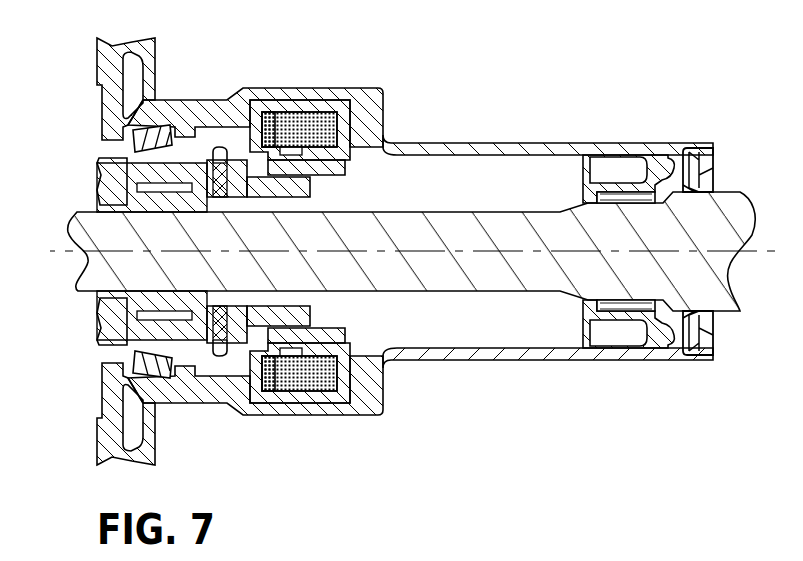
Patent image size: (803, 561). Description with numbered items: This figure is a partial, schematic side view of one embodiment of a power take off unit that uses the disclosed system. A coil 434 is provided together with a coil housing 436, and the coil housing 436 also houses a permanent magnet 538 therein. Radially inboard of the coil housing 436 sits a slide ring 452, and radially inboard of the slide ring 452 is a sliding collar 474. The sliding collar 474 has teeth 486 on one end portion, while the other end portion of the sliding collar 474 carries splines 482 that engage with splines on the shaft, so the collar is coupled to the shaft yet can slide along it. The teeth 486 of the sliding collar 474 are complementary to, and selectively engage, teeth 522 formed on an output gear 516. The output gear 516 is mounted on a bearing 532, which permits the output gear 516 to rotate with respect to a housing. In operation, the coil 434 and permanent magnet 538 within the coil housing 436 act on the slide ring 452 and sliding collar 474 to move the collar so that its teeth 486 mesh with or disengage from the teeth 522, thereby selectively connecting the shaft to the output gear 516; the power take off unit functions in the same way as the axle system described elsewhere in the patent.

The output gear 516 is at (122, 210).
The teeth 522 is at (100, 163).
The bearing 532 is at (155, 133).
The teeth 486 is at (220, 150).
The splines 482 is at (256, 198).
The sliding collar 474 is at (300, 198).
The coil housing 436 is at (345, 143).
The slide ring 452 is at (333, 165).
The coil 434 is at (318, 112).
The permanent magnet 538 is at (268, 112).